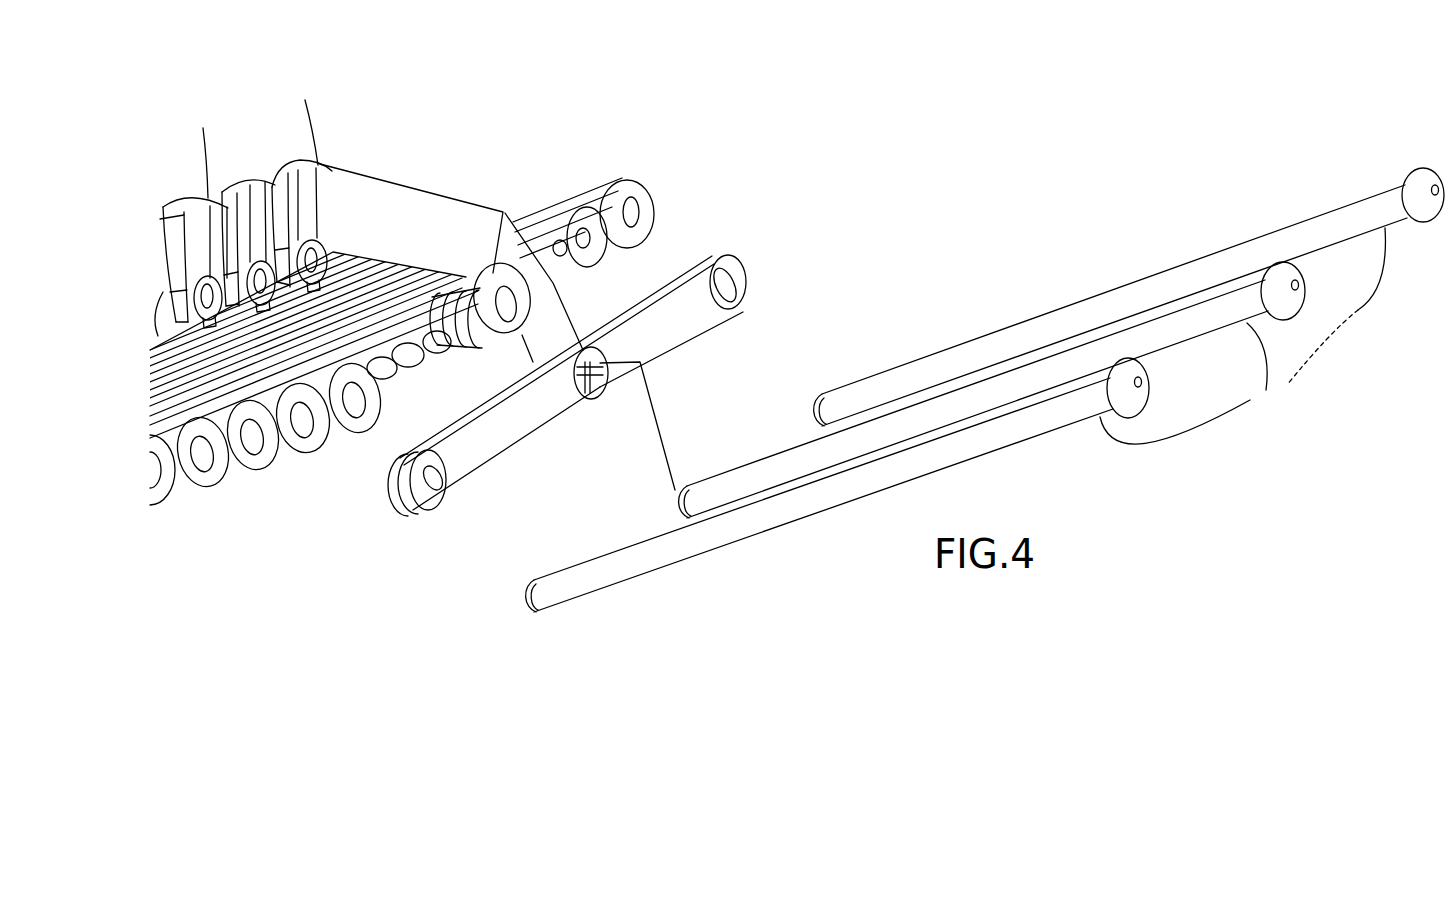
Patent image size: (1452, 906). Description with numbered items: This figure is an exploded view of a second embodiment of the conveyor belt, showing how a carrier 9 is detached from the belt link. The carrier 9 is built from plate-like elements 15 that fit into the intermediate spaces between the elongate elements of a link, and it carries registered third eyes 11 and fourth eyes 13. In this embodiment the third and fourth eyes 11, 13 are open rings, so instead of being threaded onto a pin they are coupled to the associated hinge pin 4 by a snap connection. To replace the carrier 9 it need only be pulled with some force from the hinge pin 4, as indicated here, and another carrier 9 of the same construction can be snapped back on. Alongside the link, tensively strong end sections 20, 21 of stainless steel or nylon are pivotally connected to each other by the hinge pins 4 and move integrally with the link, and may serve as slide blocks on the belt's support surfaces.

The hinge pin 4 is at (985, 390).
The carrier 9 is at (401, 197).
The third eyes 11 is at (220, 192).
The fourth eyes 13 is at (497, 262).
The plate-like element 15 is at (163, 207).
The end section 20 is at (523, 443).
The end section 21 is at (690, 335).